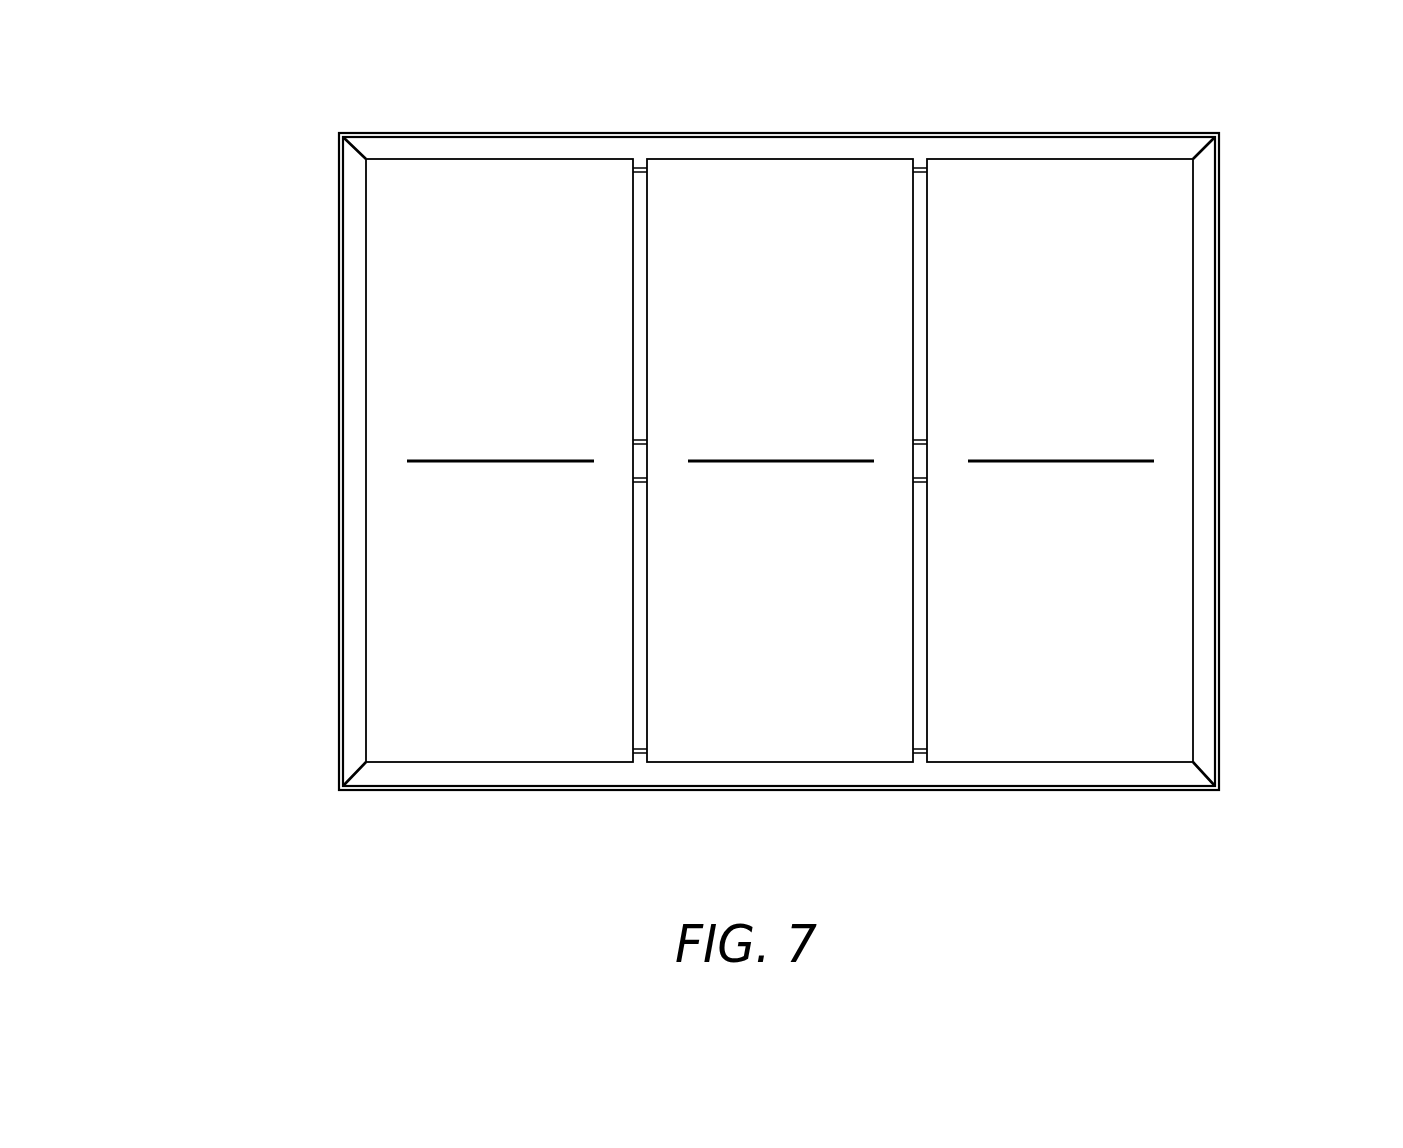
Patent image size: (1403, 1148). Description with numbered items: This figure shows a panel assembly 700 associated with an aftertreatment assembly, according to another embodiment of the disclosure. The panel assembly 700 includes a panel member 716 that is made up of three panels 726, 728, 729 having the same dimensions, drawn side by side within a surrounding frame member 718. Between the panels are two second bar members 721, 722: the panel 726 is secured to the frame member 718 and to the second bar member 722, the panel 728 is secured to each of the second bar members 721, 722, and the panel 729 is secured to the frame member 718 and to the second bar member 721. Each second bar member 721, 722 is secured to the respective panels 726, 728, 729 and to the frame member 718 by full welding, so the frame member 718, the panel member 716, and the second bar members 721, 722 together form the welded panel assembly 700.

The panel assembly 700 is at (1332, 81).
The frame member 718 is at (1250, 281).
The panel member 716 is at (1024, 652).
The second bar member 721 is at (915, 546).
The second bar member 722 is at (639, 556).
The panel 726 is at (488, 188).
The panel 728 is at (779, 188).
The panel 729 is at (1072, 188).